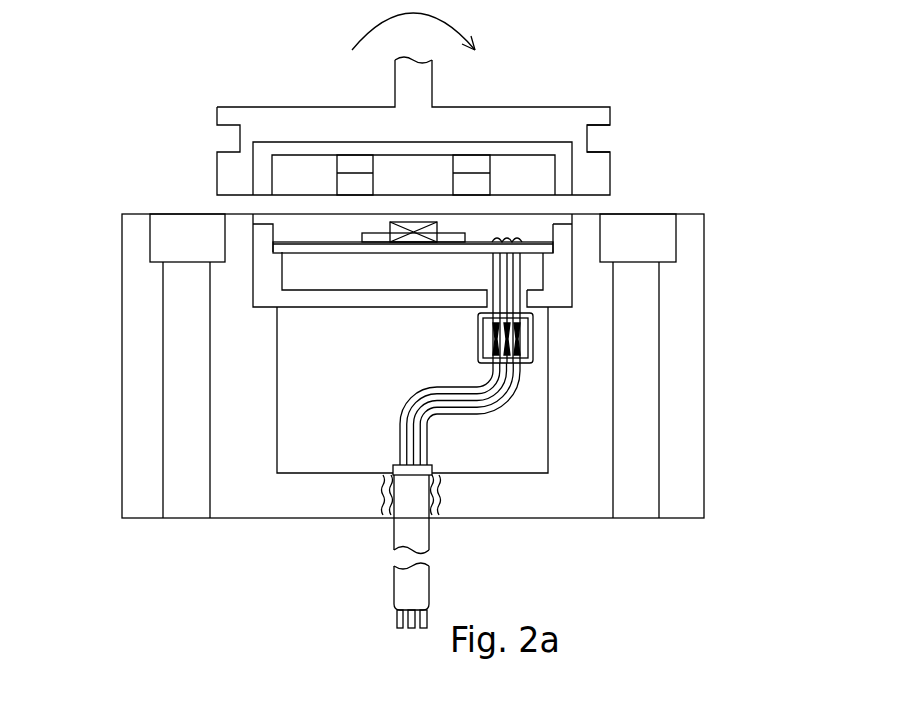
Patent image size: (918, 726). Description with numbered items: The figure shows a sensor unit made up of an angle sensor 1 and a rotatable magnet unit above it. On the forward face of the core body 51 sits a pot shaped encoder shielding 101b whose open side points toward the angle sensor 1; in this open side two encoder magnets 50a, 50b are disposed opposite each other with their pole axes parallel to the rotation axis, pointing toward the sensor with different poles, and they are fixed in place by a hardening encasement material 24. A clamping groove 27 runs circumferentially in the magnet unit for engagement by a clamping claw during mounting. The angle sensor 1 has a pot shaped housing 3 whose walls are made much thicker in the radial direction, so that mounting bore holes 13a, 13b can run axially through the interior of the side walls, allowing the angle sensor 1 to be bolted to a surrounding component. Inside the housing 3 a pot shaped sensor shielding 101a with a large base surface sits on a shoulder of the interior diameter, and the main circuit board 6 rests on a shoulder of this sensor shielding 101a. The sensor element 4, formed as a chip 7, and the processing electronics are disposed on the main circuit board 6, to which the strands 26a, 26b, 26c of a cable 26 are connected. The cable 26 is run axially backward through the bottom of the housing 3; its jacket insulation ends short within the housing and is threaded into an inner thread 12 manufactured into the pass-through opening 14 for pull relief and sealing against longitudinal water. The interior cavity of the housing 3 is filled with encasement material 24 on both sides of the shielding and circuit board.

The angle sensor 1 is at (755, 284).
The pot shaped housing 3 is at (138, 430).
The sensor element 4 is at (560, 202).
The chip 7 is at (425, 238).
The main circuit board 6 is at (288, 243).
The inner thread 12 is at (471, 535).
The pass-through opening 14 is at (432, 517).
The mounting bore hole 13a is at (175, 373).
The mounting bore hole 13b is at (643, 333).
The encasement material 24 is at (518, 177).
The cable 26 is at (403, 540).
The strand 26a is at (398, 445).
The strand 26b is at (420, 415).
The strand 26c is at (423, 430).
The clamping groove 27 is at (587, 143).
The encoder magnet 50a is at (347, 158).
The encoder magnet 50b is at (480, 158).
The core body 51 is at (327, 118).
The sensor shielding 101a is at (270, 285).
The encoder shielding 101b is at (563, 187).